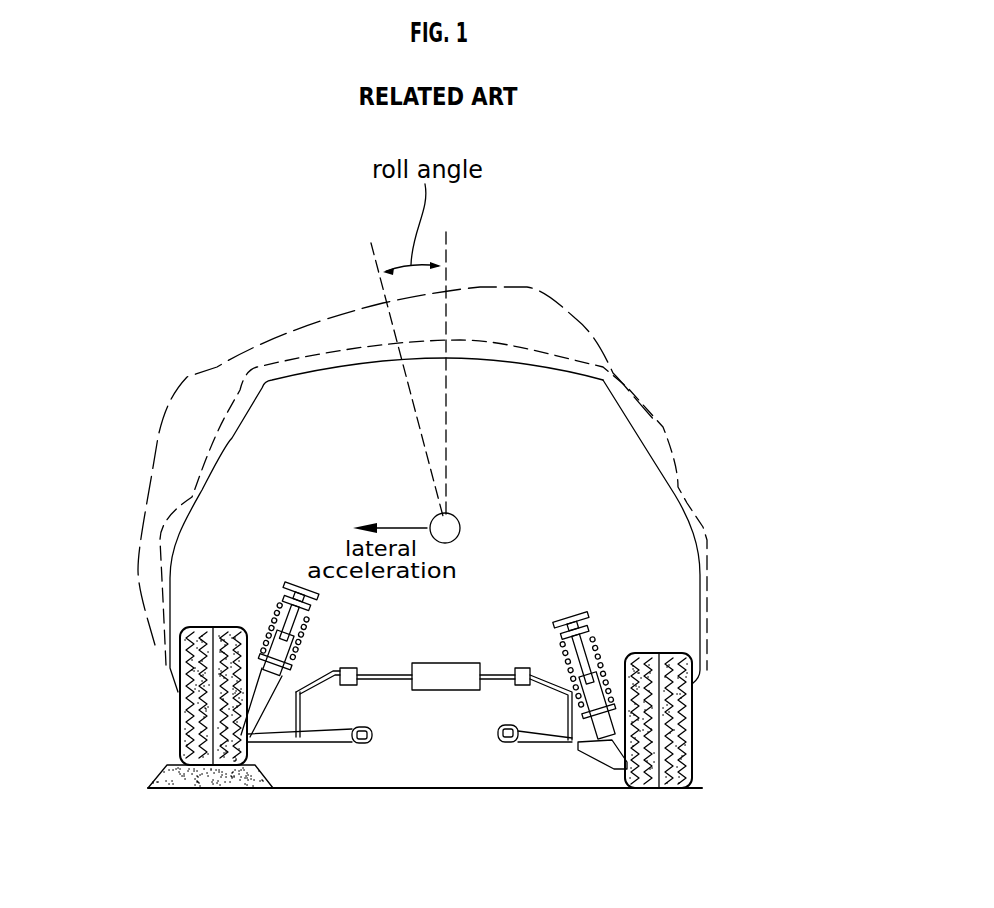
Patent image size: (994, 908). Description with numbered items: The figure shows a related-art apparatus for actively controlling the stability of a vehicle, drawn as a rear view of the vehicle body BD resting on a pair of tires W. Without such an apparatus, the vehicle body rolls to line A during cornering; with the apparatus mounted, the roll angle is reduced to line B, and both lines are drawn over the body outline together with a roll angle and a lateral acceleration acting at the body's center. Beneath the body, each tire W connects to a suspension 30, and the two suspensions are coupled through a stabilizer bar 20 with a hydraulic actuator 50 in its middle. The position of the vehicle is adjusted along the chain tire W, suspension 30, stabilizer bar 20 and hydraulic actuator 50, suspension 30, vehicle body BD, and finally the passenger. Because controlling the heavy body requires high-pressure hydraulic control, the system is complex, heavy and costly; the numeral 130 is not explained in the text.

The vehicle body 130 is at (553, 368).
The vehicle body BD is at (650, 462).
The line A is at (201, 370).
The line B is at (202, 450).
The tire W is at (210, 777).
The suspension 30 is at (612, 639).
The stabilizer bar 20 is at (387, 680).
The hydraulic actuator 50 is at (450, 679).